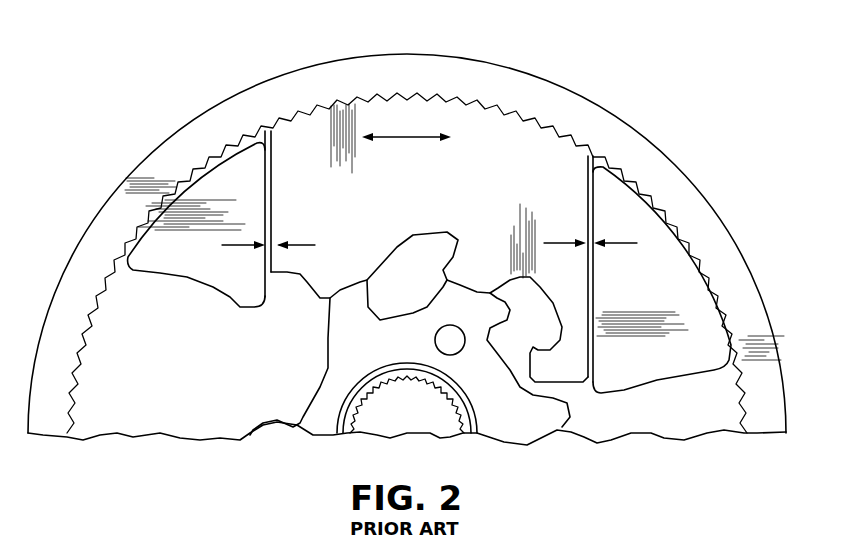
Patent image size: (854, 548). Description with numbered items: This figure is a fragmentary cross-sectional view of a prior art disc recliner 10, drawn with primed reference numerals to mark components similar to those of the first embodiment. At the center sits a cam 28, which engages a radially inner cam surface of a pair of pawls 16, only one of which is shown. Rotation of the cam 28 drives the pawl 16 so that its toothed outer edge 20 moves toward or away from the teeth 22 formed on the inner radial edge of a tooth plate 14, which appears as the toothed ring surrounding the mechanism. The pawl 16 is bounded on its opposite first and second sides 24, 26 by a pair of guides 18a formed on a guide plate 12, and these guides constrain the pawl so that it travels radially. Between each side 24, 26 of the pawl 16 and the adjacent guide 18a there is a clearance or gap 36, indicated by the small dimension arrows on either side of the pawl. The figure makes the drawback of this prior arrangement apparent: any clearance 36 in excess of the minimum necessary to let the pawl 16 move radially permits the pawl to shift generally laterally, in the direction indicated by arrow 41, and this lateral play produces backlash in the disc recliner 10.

The disc recliner 10 is at (176, 94).
The guide plate 12 is at (707, 337).
The tooth plate 14 is at (436, 77).
The pawl 16 is at (552, 180).
The guides 18a is at (223, 193).
The toothed outer edge 20 is at (380, 97).
The teeth 22 is at (561, 150).
The first side 24 is at (257, 132).
The second side 26 is at (599, 166).
The cam 28 is at (328, 368).
The clearance or gap 36 is at (236, 248).
The arrow 41 is at (402, 140).